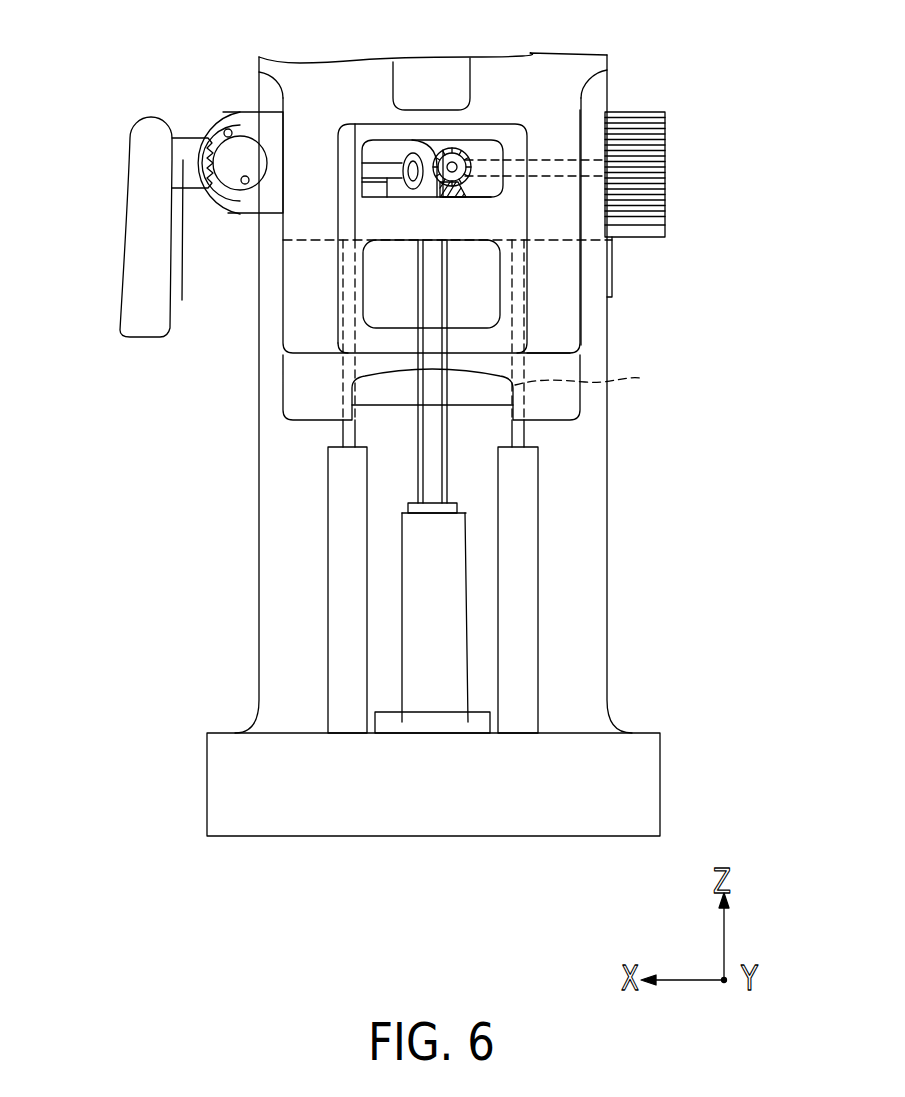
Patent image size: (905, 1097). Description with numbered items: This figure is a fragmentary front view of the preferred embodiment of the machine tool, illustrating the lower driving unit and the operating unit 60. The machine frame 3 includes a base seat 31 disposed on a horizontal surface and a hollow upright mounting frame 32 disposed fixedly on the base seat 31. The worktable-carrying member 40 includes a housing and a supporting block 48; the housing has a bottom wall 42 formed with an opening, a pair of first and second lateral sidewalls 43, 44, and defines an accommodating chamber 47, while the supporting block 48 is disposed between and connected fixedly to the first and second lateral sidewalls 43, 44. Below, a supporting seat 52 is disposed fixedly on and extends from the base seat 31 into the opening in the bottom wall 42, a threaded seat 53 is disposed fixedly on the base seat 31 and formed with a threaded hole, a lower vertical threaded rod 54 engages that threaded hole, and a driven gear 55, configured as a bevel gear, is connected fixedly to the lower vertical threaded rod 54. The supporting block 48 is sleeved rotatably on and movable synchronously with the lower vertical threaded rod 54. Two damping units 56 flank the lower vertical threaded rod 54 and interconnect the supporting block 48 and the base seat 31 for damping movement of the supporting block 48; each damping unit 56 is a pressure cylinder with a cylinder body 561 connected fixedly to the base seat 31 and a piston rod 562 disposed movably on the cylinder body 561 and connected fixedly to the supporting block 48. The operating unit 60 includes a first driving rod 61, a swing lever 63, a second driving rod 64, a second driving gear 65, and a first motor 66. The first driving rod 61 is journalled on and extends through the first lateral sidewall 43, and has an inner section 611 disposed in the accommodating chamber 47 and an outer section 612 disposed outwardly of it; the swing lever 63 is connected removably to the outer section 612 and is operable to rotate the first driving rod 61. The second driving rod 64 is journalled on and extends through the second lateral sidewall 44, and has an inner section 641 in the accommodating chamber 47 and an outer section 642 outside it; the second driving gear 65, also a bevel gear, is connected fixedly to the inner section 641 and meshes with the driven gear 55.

The machine frame 3 is at (609, 631).
The base seat 31 is at (640, 797).
The upright mounting frame 32 is at (590, 455).
The worktable-carrying member 40 is at (284, 388).
The bottom wall 42 is at (310, 417).
The first lateral sidewall 43 is at (290, 300).
The second lateral sidewall 44 is at (557, 320).
The accommodating chamber 47 is at (483, 288).
The supporting block 48 is at (463, 230).
The supporting seat 52 is at (400, 627).
The threaded seat 53 is at (367, 505).
The lower vertical threaded rod 54 is at (327, 448).
The driven gear 55 is at (447, 187).
The damping unit 56 is at (335, 690).
The cylinder body 561 is at (533, 520).
The piston rod 562 is at (603, 378).
The operating unit 60 is at (148, 136).
The first driving rod 61 is at (378, 160).
The inner section 611 is at (398, 168).
The outer section 612 is at (218, 128).
The swing lever 63 is at (142, 243).
The second driving rod 64 is at (495, 150).
The inner section 641 is at (485, 167).
The outer section 642 is at (598, 160).
The second driving gear 65 is at (448, 148).
The first motor 66 is at (650, 113).